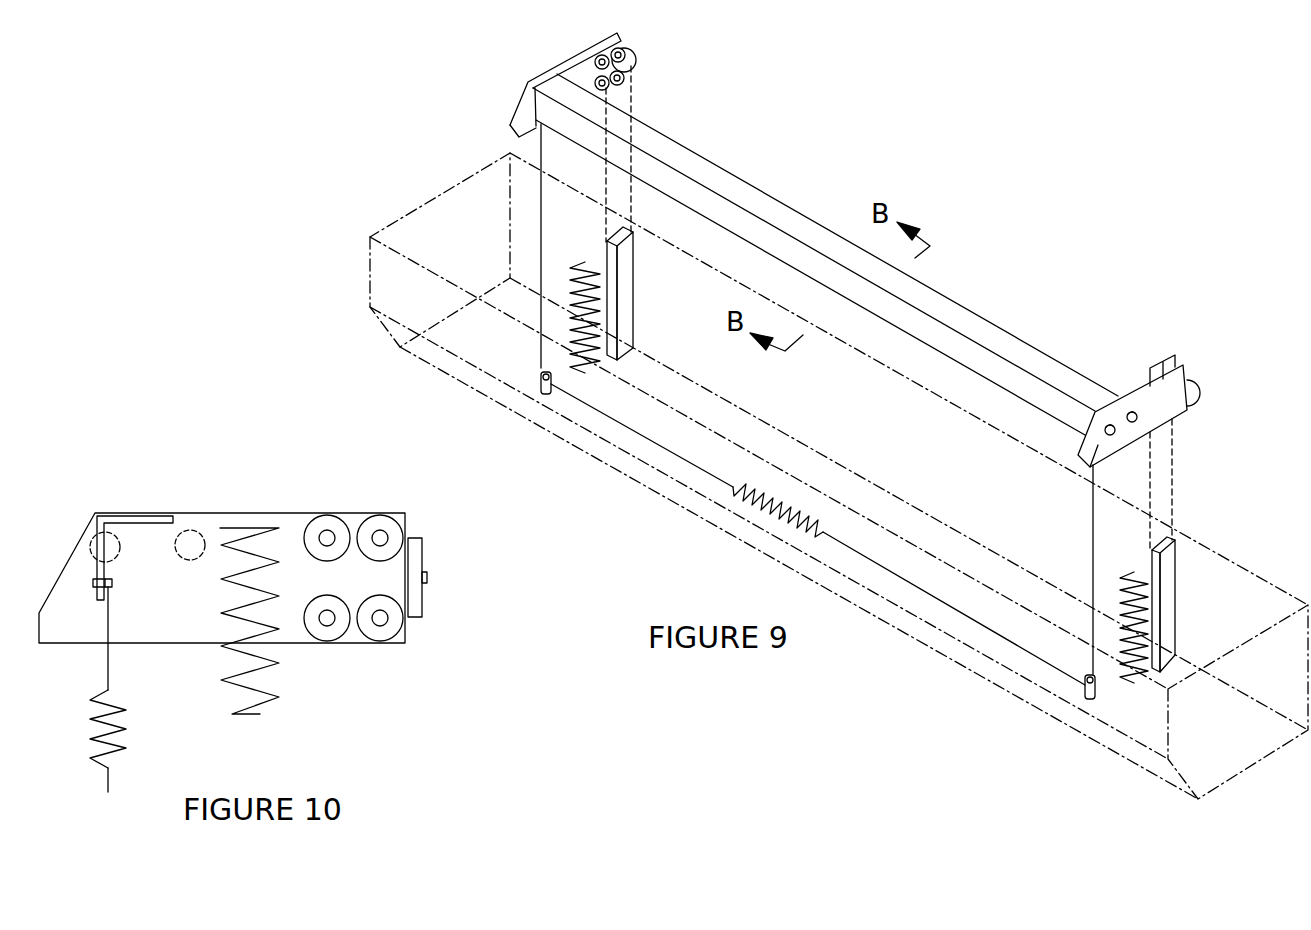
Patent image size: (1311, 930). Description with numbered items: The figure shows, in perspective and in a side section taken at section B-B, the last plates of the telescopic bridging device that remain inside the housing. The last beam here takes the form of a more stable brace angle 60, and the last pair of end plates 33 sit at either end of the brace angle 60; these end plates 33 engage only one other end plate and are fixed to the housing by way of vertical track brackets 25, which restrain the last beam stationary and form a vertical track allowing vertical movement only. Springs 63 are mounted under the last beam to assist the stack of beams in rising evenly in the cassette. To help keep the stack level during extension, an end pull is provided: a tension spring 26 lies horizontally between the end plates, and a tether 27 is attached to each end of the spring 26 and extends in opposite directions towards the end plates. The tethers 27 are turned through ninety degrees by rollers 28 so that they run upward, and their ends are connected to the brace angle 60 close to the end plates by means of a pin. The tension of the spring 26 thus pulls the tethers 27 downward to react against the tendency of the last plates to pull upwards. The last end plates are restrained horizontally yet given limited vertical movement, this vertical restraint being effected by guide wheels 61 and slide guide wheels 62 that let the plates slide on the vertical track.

In FIG. 9, the vertical track brackets 25 is at (620, 292).
In FIG. 9, the tension spring 26 is at (772, 516).
In FIG. 9, the tether 27 is at (950, 607).
In FIG. 10, the tether 27 is at (110, 667).
In FIG. 9, the rollers 28 is at (543, 396).
In FIG. 9, the last pair of end plates 33 is at (578, 75).
In FIG. 10, the last pair of end plates 33 is at (60, 632).
In FIG. 9, the brace angle 60 is at (747, 202).
In FIG. 10, the brace angle 60 is at (145, 520).
In FIG. 9, the guide wheels 61 is at (612, 88).
In FIG. 10, the guide wheels 61 is at (335, 630).
In FIG. 9, the slide guide wheels 62 is at (634, 56).
In FIG. 10, the slide guide wheels 62 is at (423, 547).
In FIG. 9, the springs 63 is at (575, 272).
In FIG. 10, the springs 63 is at (248, 643).